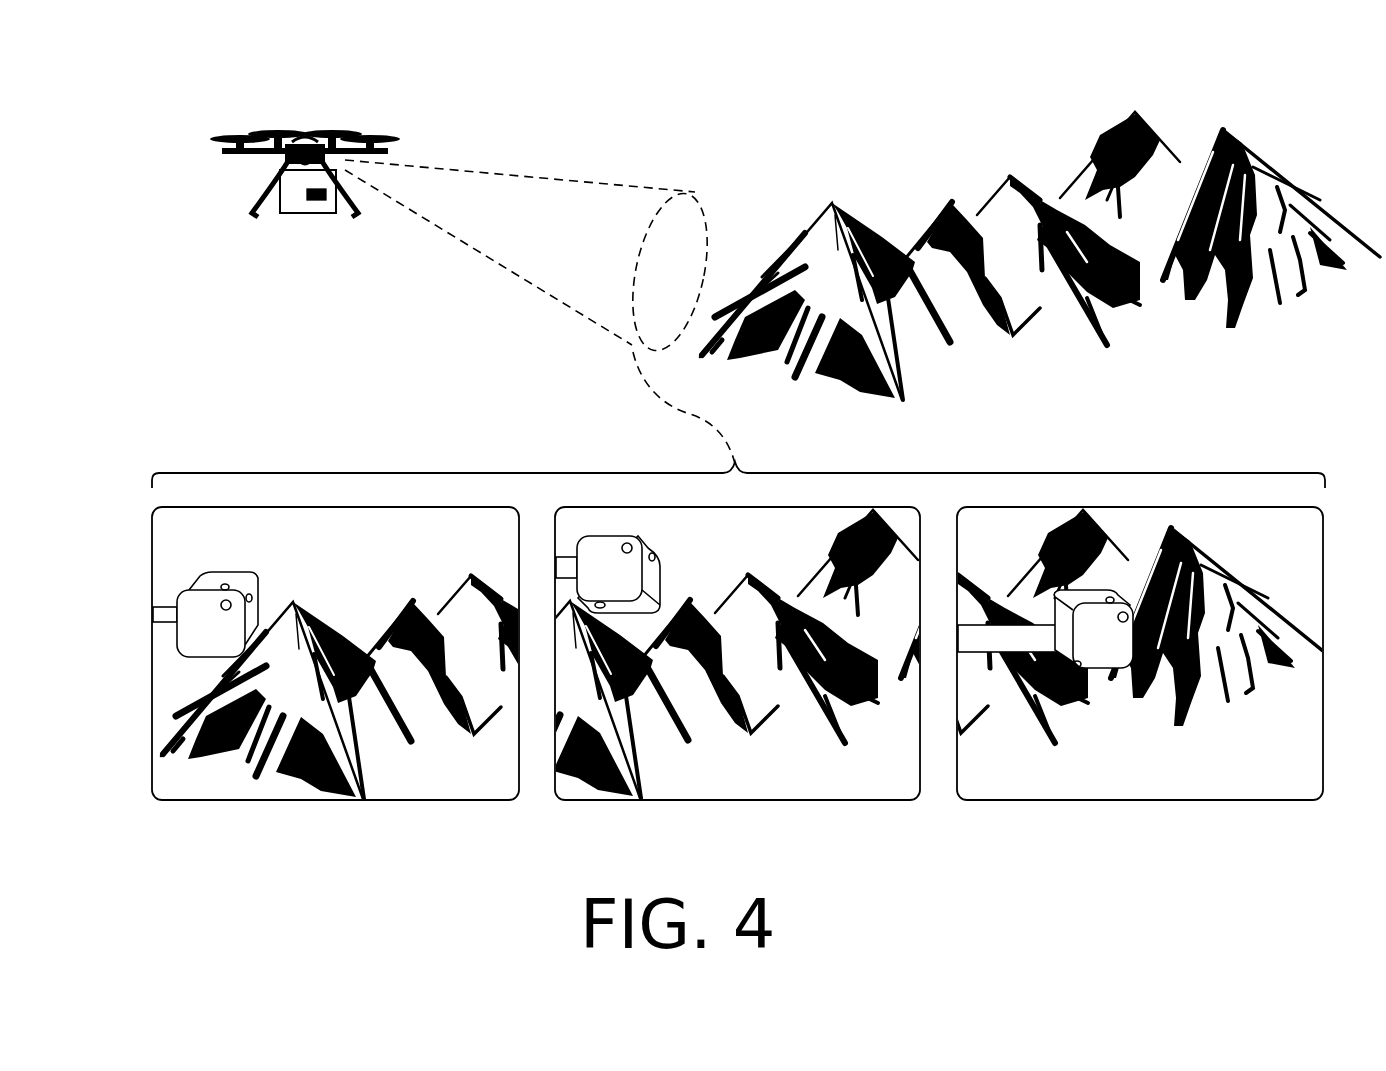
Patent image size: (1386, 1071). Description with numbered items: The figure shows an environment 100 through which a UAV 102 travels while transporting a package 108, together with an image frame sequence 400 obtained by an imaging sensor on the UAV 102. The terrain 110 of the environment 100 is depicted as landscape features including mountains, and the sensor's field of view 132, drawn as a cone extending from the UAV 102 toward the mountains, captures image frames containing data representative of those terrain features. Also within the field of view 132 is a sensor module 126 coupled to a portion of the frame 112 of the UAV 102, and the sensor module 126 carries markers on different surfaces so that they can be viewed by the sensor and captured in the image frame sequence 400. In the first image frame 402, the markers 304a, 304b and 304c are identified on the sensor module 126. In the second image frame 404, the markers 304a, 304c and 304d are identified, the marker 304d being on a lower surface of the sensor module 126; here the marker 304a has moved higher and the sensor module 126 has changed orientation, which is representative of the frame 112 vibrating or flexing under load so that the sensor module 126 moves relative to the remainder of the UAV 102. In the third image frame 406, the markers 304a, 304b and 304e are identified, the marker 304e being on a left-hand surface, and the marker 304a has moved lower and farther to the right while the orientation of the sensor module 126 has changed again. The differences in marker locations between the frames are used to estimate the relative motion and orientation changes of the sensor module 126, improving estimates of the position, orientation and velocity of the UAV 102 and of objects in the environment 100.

The environment 100 is at (820, 141).
The UAV 102 is at (232, 107).
The package 108 is at (287, 213).
The terrain 110 is at (975, 142).
The frame 112 is at (167, 628).
The sensor module 126 is at (330, 213).
The field of view 132 is at (496, 177).
The marker 304a is at (223, 603).
The marker 304b is at (226, 584).
The marker 304c is at (251, 596).
The marker 304d is at (605, 604).
The marker 304e is at (1078, 667).
The image frame sequence 400 is at (738, 464).
The first image frame 402 is at (335, 688).
The second image frame 404 is at (737, 688).
The third image frame 406 is at (1140, 686).